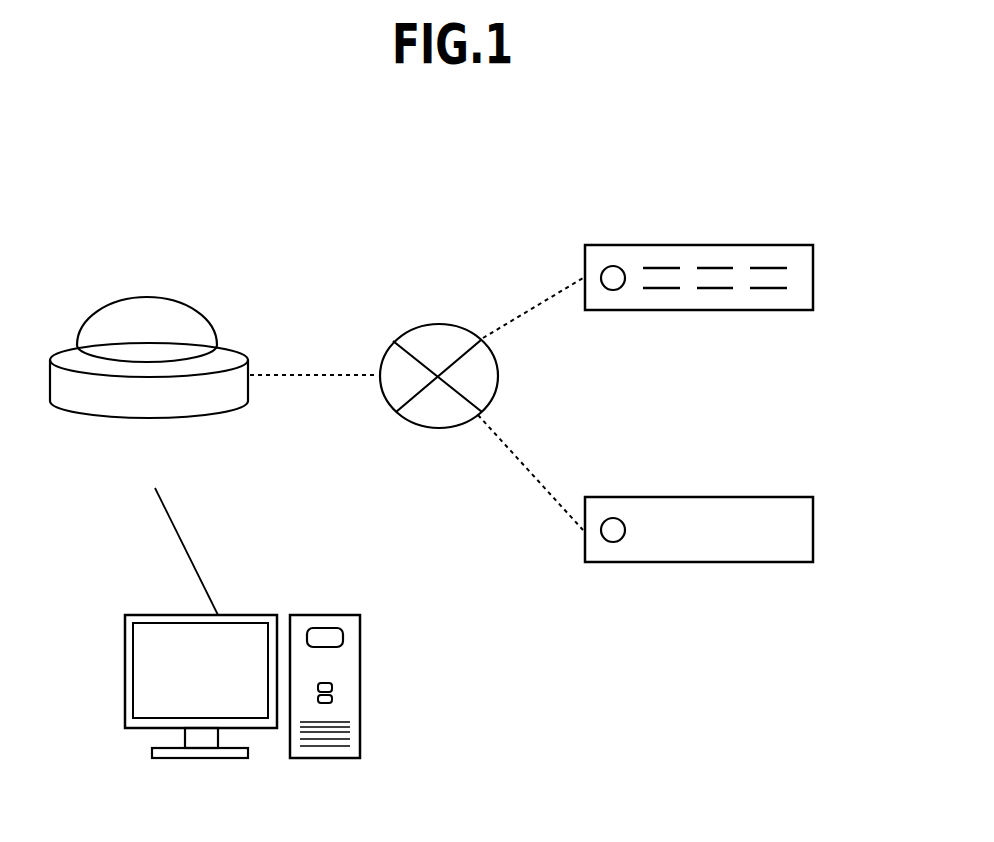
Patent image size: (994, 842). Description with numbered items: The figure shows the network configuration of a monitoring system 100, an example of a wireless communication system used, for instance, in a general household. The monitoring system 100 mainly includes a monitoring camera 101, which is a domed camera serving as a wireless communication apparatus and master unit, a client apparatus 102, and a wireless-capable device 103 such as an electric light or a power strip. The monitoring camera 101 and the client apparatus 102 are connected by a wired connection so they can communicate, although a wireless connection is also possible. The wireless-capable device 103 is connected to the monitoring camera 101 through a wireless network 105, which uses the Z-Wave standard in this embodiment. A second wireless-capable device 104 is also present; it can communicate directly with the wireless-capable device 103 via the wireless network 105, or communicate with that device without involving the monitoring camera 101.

The monitoring system 100 is at (555, 193).
The monitoring camera 101 is at (148, 297).
The client apparatus 102 is at (360, 672).
The wireless-capable device 103 is at (813, 278).
The second wireless-capable device 104 is at (813, 530).
The wireless network 105 is at (440, 323).